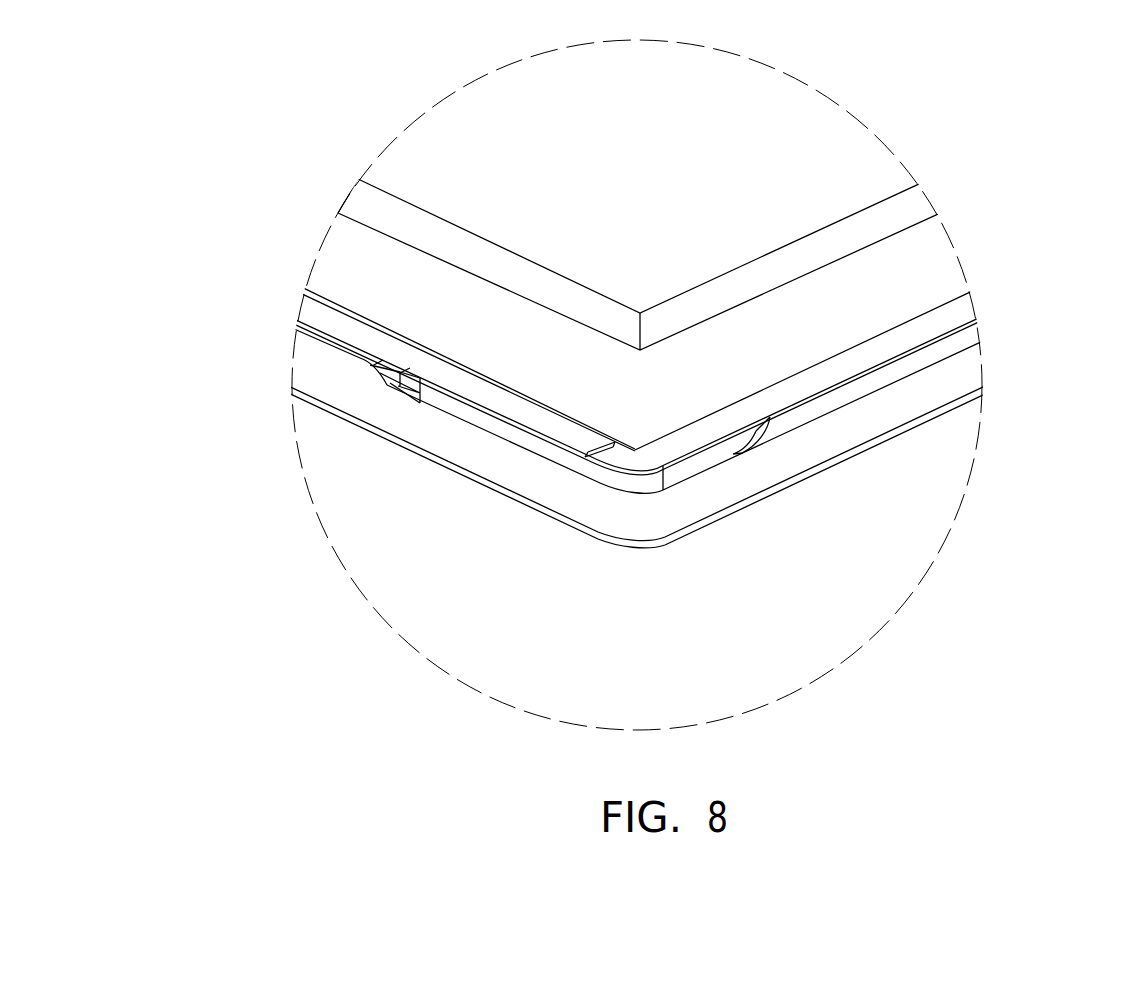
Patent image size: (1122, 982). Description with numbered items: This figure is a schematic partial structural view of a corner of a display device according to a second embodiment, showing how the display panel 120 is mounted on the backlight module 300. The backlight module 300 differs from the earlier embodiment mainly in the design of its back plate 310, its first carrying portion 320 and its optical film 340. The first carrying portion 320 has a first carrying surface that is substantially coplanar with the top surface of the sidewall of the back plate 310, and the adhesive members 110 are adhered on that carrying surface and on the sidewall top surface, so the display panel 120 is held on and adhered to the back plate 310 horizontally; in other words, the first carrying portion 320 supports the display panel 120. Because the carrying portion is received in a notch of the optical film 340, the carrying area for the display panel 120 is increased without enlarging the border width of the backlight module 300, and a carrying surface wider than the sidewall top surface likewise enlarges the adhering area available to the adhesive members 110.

The display panel 120 is at (367, 202).
The optical film 340 is at (340, 267).
The adhesive members 110 is at (317, 313).
The first carrying portion 320 is at (530, 443).
The backlight module 300 is at (820, 501).
The back plate 310 is at (680, 510).